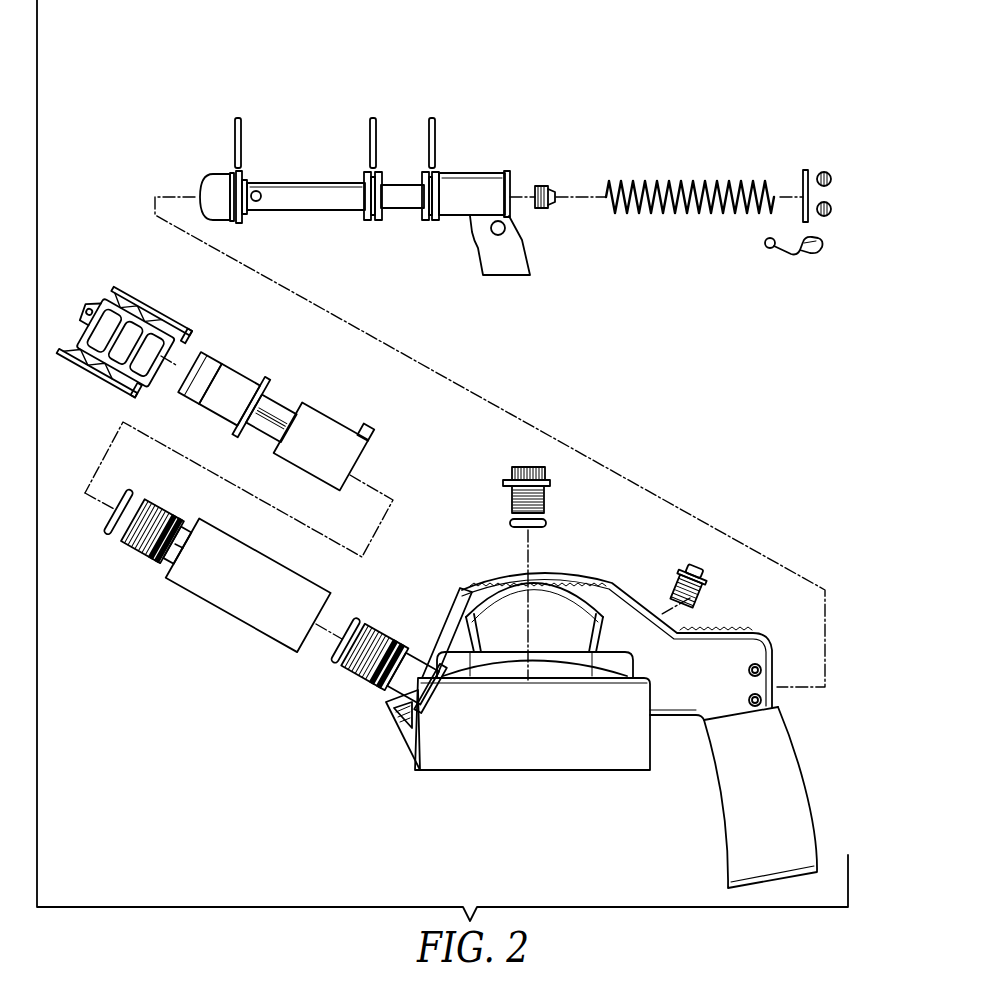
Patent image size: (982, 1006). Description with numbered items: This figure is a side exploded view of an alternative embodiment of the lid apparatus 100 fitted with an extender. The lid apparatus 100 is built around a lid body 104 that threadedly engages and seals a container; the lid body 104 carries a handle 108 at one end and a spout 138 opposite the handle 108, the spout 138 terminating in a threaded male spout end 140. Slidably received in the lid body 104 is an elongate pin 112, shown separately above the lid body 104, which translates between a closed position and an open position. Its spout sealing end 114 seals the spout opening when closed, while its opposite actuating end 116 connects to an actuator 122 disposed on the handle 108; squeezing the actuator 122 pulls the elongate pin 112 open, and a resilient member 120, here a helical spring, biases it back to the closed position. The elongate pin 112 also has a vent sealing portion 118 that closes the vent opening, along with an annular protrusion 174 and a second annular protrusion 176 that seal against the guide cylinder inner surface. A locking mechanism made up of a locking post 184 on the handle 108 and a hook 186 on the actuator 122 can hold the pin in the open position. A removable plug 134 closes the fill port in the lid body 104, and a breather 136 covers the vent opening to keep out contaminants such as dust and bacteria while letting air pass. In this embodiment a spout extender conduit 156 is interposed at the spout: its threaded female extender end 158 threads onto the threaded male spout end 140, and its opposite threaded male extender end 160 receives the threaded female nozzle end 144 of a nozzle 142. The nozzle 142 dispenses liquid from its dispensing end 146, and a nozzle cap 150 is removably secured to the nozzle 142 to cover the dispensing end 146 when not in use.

The lid apparatus 100 is at (737, 81).
The lid body 104 is at (456, 629).
The handle 108 is at (780, 776).
The elongate pin 112 is at (306, 182).
The spout sealing end 114 is at (195, 181).
The actuating end 116 is at (514, 177).
The vent sealing portion 118 is at (432, 116).
The resilient member 120 is at (651, 208).
The actuator 122 is at (500, 263).
The removable plug 134 is at (523, 466).
The breather 136 is at (708, 582).
The spout 138 is at (386, 708).
The threaded male spout end 140 is at (348, 684).
The nozzle 142 is at (233, 379).
The threaded female nozzle end 144 is at (371, 460).
The dispensing end 146 is at (200, 350).
The nozzle cap 150 is at (106, 314).
The spout extender conduit 156 is at (231, 620).
The threaded female extender end 158 is at (334, 598).
The threaded male extender end 160 is at (141, 566).
The annular protrusion 174 is at (379, 171).
The second annular protrusion 176 is at (433, 221).
The locking post 184 is at (826, 217).
The hook 186 is at (793, 256).